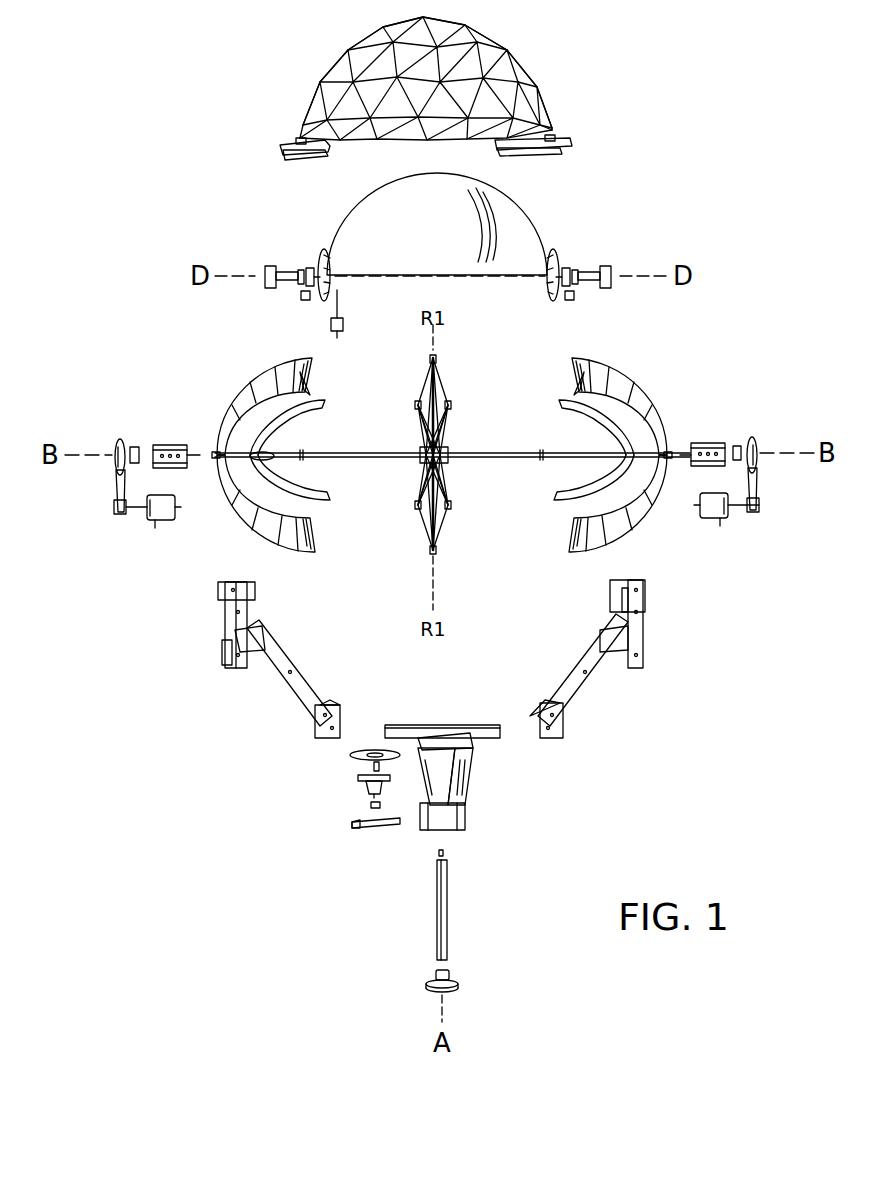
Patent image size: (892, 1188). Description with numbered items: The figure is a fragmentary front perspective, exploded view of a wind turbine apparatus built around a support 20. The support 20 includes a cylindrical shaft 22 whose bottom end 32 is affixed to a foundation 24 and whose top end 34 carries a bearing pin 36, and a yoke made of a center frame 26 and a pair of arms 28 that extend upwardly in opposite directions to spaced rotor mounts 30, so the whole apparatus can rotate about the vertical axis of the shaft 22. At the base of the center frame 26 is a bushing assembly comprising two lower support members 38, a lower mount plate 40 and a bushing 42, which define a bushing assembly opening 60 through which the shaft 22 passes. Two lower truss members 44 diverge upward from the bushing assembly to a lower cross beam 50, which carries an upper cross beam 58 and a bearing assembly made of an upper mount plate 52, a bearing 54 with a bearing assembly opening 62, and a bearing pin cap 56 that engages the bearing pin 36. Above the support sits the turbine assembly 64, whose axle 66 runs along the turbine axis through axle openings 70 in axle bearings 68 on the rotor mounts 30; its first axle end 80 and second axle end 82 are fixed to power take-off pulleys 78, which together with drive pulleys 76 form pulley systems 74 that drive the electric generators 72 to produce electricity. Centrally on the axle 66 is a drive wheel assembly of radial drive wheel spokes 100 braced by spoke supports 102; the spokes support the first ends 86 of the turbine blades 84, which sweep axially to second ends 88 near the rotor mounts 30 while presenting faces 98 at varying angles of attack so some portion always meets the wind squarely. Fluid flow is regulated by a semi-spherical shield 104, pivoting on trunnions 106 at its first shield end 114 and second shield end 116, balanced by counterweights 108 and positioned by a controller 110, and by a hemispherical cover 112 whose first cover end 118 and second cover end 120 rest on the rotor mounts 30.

The support 20 is at (262, 818).
The shaft 22 is at (448, 900).
The foundation 24 is at (430, 987).
The center frame 26 is at (488, 783).
The arms 28 is at (272, 680).
The rotor mounts 30 is at (225, 621).
The bottom end 32 is at (437, 958).
The top end 34 is at (437, 862).
The bearing pin 36 is at (446, 853).
The lower support members 38 is at (466, 812).
The lower mount plate 40 is at (355, 826).
The bushing 42 is at (370, 806).
The lower truss members 44 is at (470, 752).
The lower cross beam 50 is at (455, 736).
The upper mount plate 52 is at (376, 748).
The bearing 54 is at (358, 783).
The bearing pin cap 56 is at (372, 766).
The upper cross beam 58 is at (398, 724).
The bushing assembly opening 60 is at (373, 829).
The bearing assembly opening 62 is at (368, 795).
The turbine assembly 64 is at (712, 382).
The axle 66 is at (496, 450).
The axle bearings 68 is at (153, 446).
The axle openings 70 is at (133, 446).
The electric generators 72 is at (150, 524).
The pulley systems 74 is at (100, 440).
The drive pulley 76 is at (114, 507).
The power take-off pulley 78 is at (115, 460).
The first axle end 80 is at (275, 455).
The second axle end 82 is at (592, 453).
The turbine blades 84 is at (290, 384).
The first ends 86 is at (314, 362).
The second ends 88 is at (216, 449).
The faces 98 is at (268, 527).
The drive wheel spokes 100 is at (430, 357).
The spoke supports 102 is at (440, 386).
The shield 104 is at (345, 218).
The trunnions 106 is at (265, 272).
The counterweights 108 is at (300, 298).
The controller 110 is at (342, 320).
The cover 112 is at (488, 38).
The first shield end 114 is at (325, 252).
The second shield end 116 is at (549, 262).
The first cover end 118 is at (293, 140).
The second cover end 120 is at (572, 140).